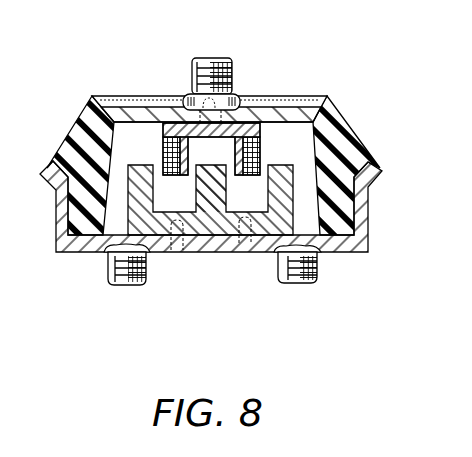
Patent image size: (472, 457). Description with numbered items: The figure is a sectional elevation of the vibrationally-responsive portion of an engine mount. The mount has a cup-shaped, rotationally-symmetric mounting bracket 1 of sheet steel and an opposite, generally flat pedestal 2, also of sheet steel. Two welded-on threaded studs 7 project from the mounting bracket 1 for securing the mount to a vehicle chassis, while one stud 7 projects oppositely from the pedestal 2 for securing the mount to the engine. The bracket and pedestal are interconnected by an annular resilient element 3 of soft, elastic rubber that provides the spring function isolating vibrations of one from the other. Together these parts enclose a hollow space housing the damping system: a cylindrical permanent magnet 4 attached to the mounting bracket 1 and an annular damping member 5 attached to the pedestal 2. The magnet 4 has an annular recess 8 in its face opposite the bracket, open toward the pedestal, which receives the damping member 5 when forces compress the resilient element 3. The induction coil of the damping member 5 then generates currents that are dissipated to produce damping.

The mounting bracket 1 is at (362, 217).
The pedestal 2 is at (258, 110).
The annular resilient element 3 is at (357, 143).
The magnet 4 is at (132, 203).
The annular damping member 5 is at (260, 145).
The threaded stud 7 is at (193, 83).
The annular recess 8 is at (236, 202).